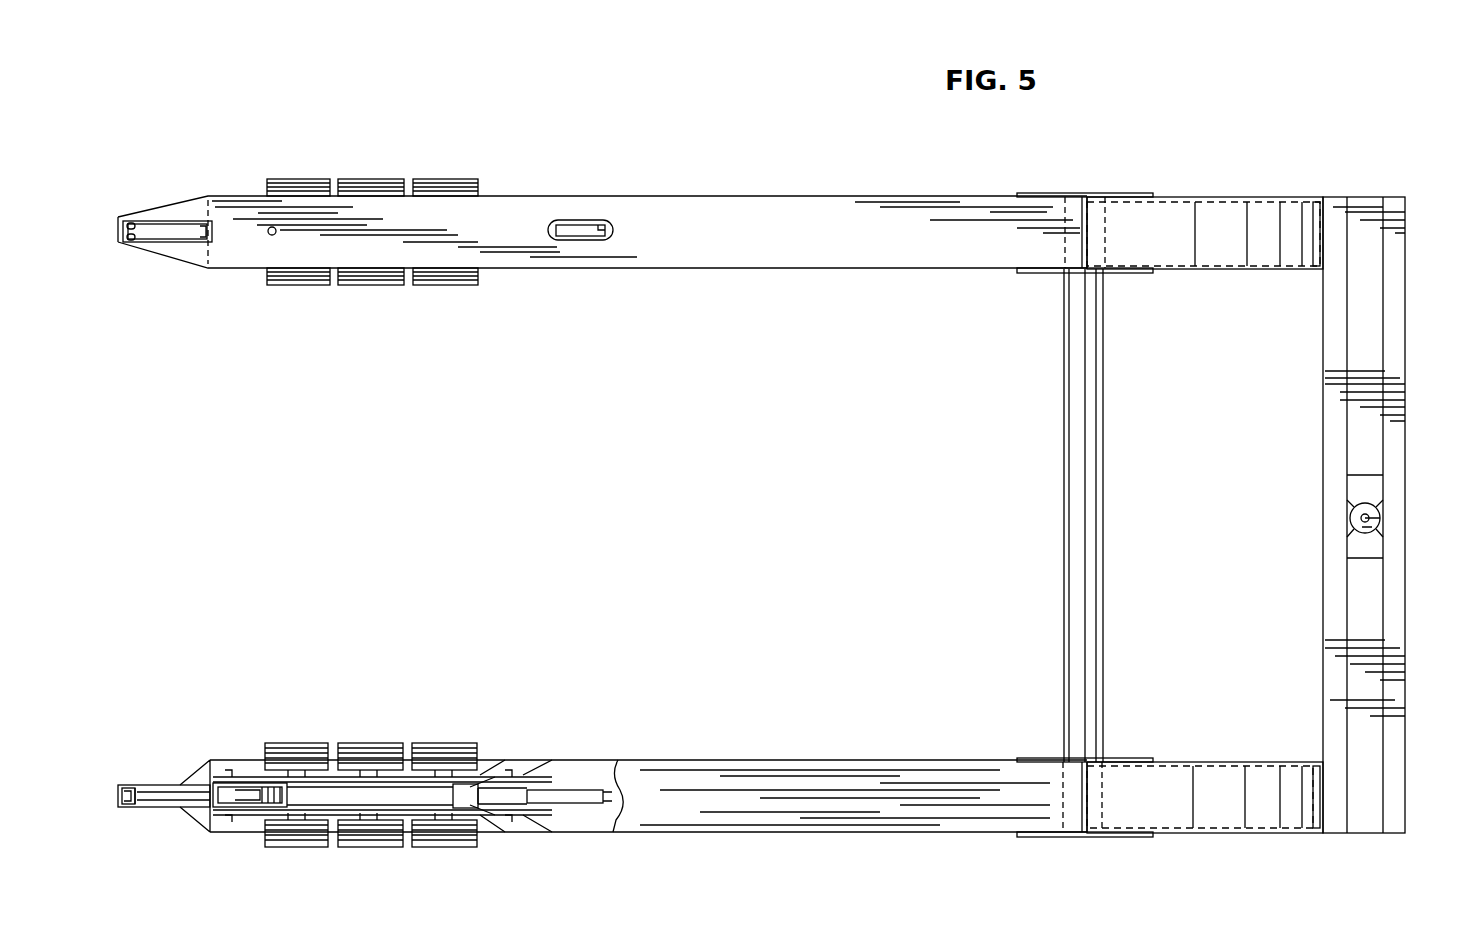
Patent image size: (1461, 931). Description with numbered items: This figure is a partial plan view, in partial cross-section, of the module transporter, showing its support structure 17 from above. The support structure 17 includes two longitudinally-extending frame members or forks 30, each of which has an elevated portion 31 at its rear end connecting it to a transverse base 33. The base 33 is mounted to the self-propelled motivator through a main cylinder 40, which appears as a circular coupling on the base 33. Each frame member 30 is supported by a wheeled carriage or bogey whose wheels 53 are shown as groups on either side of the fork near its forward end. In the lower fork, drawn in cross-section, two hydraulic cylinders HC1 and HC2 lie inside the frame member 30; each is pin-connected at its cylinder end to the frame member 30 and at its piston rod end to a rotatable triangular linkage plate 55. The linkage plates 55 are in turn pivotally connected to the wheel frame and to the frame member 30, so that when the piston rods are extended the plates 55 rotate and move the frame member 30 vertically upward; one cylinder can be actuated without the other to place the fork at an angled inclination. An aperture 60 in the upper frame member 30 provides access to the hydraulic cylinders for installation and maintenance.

The support structure 17 is at (733, 196).
The frame member 30 is at (808, 241).
The elevated portion 31 is at (1213, 250).
The transverse base 33 is at (1392, 762).
The main cylinder 40 is at (1383, 518).
The wheels 53 is at (425, 181).
The triangular linkage plate 55 is at (247, 787).
The aperture 60 is at (583, 236).
The hydraulic cylinder HC1 is at (167, 793).
The hydraulic cylinder HC2 is at (568, 792).